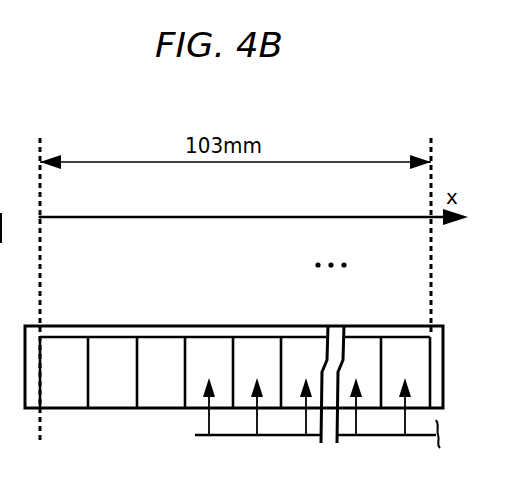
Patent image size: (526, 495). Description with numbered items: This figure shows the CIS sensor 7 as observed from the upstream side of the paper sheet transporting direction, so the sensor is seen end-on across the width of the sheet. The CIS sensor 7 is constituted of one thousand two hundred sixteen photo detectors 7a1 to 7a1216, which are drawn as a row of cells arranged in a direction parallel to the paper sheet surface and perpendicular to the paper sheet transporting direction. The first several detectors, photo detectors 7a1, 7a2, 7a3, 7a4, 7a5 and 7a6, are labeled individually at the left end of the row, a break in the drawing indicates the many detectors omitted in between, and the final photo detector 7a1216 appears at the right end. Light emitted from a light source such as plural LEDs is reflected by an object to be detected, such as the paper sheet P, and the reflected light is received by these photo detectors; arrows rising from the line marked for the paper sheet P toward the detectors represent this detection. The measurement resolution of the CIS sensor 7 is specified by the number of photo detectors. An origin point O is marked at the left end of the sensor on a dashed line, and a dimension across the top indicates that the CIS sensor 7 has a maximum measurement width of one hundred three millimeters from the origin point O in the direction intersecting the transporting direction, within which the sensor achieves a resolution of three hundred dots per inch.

The CIS sensor 7 is at (26, 409).
The photo detector 7a1 is at (63, 348).
The photo detector 7a2 is at (108, 347).
The photo detector 7a3 is at (154, 348).
The photo detector 7a4 is at (208, 347).
The photo detector 7a5 is at (256, 348).
The photo detector 7a6 is at (305, 350).
The photo detector 7a1216 is at (398, 350).
The paper sheet P is at (211, 437).
The origin point O is at (40, 213).